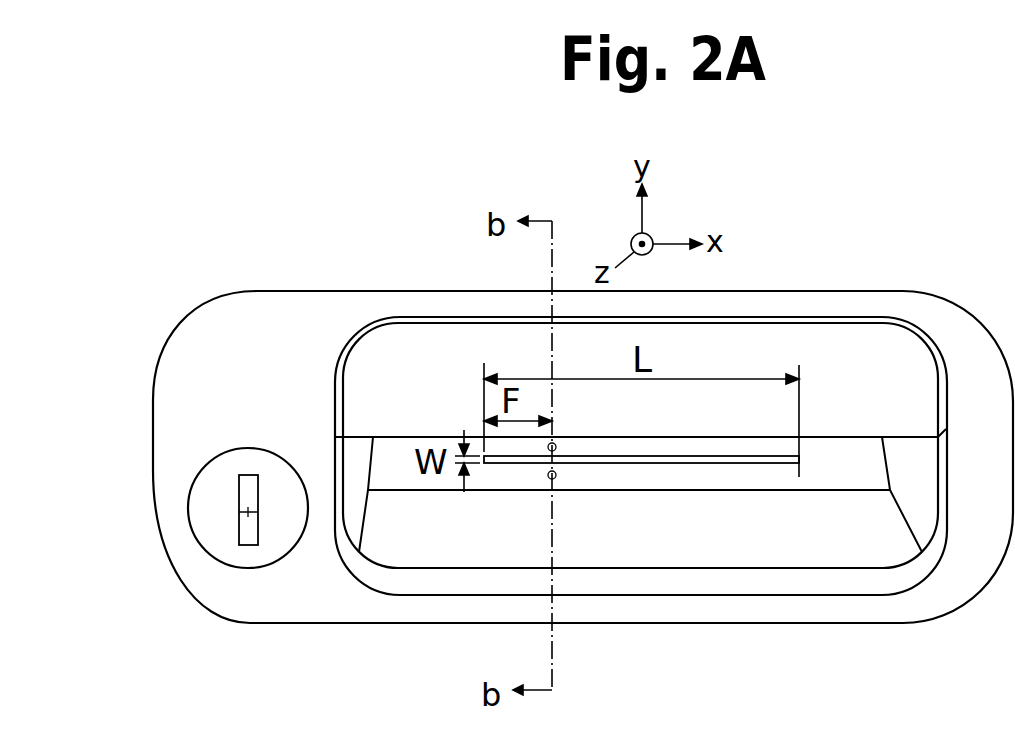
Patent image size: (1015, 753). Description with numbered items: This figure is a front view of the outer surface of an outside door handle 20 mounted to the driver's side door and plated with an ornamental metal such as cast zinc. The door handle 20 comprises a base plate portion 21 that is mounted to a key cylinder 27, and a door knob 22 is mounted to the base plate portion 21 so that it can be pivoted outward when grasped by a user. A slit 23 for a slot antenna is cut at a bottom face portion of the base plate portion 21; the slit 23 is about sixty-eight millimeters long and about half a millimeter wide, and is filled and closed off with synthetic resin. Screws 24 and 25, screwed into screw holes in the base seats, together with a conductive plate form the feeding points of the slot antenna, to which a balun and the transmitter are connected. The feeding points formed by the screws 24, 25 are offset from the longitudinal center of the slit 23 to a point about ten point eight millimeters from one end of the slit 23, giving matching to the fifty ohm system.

The outside door handle 20 is at (761, 292).
The base plate portion 21 is at (872, 553).
The door knob 22 is at (862, 345).
The slit 23 is at (799, 477).
The screw 24 is at (553, 443).
The screw 25 is at (555, 479).
The key cylinder 27 is at (254, 568).